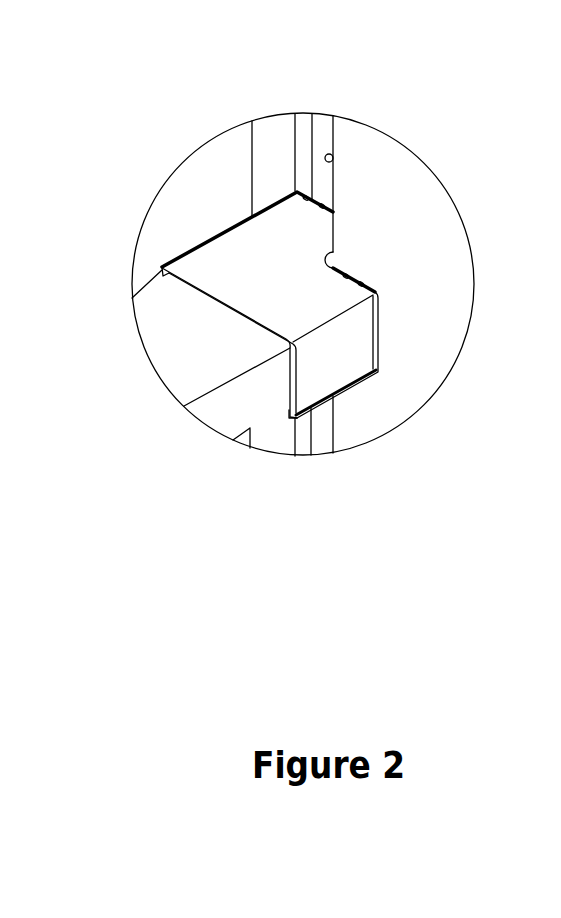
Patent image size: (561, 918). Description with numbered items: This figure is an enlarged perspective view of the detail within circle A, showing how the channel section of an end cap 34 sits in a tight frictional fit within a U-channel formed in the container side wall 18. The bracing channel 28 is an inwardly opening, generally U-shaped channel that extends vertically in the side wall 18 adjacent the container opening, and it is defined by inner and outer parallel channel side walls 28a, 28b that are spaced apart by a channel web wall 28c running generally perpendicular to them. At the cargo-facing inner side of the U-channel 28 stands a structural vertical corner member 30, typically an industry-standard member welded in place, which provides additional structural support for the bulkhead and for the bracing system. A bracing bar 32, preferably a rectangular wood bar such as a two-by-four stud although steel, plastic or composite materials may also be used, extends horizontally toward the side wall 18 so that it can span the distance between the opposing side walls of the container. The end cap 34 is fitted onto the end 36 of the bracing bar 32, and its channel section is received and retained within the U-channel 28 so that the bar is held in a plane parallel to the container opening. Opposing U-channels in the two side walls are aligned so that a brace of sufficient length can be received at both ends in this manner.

The side wall 18 is at (227, 218).
The structural vertical corner member 30 is at (267, 132).
The bracing channel 28 is at (323, 442).
The inner channel side wall 28a is at (303, 118).
The outer channel side wall 28b is at (333, 160).
The channel web wall 28c is at (322, 118).
The bracing bar 32 is at (177, 365).
The end cap 34 is at (350, 358).
The end of the bracing bar 36 is at (285, 402).
The circle A is at (346, 334).